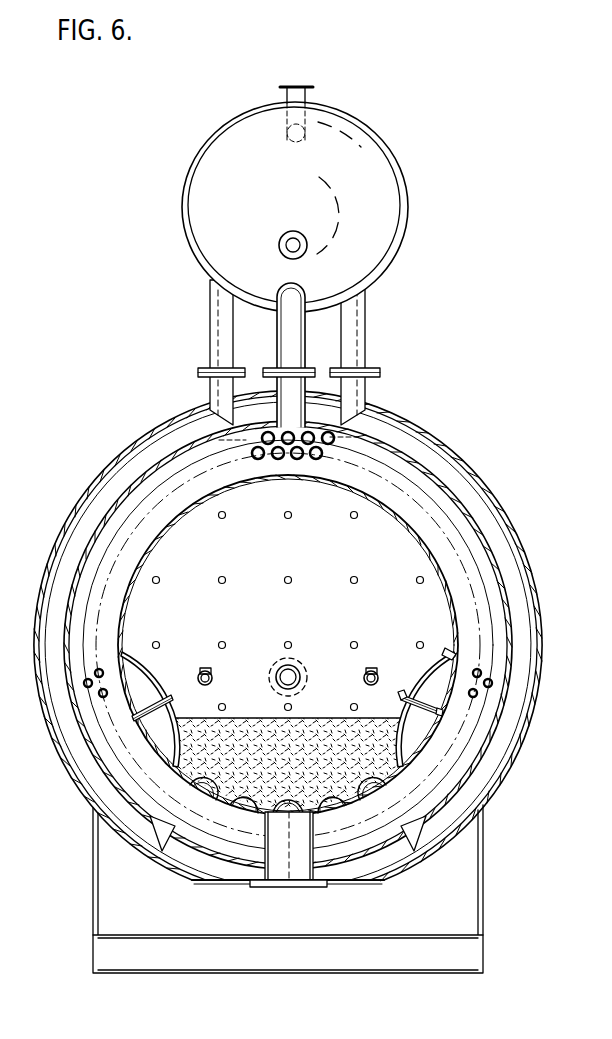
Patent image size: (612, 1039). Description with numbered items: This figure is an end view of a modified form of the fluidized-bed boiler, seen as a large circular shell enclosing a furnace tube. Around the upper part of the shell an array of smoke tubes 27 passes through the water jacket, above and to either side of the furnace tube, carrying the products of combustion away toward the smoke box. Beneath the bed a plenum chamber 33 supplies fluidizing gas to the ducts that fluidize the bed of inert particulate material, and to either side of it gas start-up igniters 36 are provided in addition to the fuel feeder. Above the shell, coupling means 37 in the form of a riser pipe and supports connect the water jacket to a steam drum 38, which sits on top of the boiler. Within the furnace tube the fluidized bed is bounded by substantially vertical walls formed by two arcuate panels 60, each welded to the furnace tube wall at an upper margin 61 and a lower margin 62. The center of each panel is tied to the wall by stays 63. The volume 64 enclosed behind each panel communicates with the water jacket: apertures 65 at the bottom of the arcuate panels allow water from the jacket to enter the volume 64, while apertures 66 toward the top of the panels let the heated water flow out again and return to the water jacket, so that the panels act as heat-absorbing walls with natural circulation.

The smoke tubes 27 is at (322, 459).
The plenum chamber 33 is at (291, 666).
The gas start-up igniters 36 is at (211, 672).
The means for coupling the water jacket to a steam drum 37 is at (295, 263).
The steam drum 38 is at (304, 192).
The arcuate panels 60 is at (130, 657).
The upper welded margin 61 is at (446, 657).
The lower welded margin 62 is at (410, 752).
The stays 63 is at (425, 720).
The volume behind panel 64 is at (438, 687).
The apertures at bottom of panels 65 is at (175, 765).
The apertures at top of panels 66 is at (122, 670).